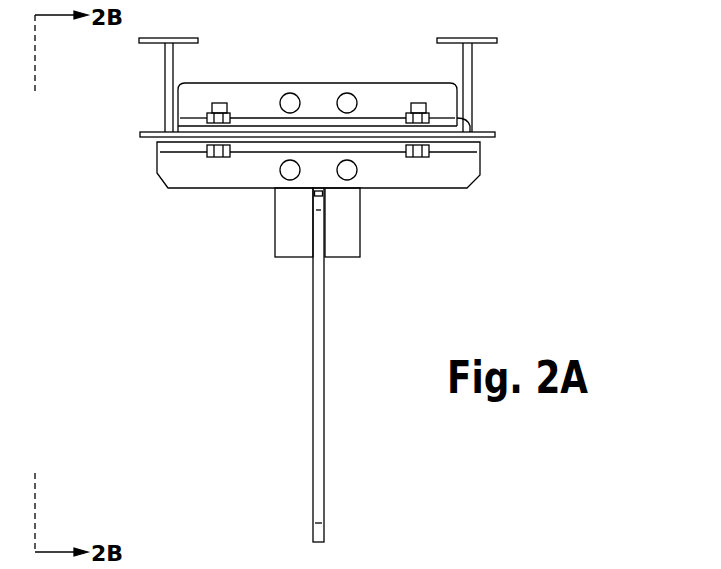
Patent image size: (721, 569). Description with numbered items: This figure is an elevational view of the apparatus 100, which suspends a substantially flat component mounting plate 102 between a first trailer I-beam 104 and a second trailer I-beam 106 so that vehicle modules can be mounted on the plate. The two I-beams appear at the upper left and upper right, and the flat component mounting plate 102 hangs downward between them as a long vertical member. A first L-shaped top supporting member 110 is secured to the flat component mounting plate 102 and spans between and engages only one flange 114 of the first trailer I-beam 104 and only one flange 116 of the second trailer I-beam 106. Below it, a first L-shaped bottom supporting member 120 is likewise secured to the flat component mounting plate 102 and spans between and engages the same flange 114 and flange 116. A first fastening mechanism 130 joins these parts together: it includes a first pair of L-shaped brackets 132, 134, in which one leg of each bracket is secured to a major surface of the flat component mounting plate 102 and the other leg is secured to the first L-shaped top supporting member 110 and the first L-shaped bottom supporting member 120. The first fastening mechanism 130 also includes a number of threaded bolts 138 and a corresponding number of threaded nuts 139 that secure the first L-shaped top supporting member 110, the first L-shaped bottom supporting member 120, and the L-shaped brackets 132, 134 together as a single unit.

The apparatus 100 is at (556, 129).
The flat component mounting plate 102 is at (324, 452).
The first trailer I-beam 104 is at (173, 40).
The second trailer I-beam 106 is at (485, 38).
The first L-shaped top supporting member 110 is at (378, 82).
The flange of the first trailer I-beam 114 is at (178, 133).
The flange of the second trailer I-beam 116 is at (478, 122).
The first L-shaped bottom supporting member 120 is at (440, 190).
The first fastening mechanism 130 is at (276, 270).
The L-shaped bracket 132 is at (297, 258).
The L-shaped bracket 134 is at (340, 258).
The threaded bolts 138 is at (345, 92).
The threaded nuts 139 is at (229, 112).